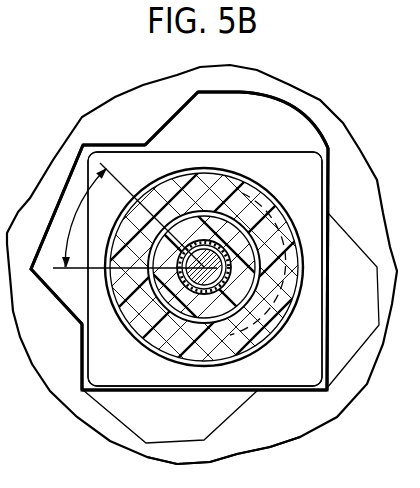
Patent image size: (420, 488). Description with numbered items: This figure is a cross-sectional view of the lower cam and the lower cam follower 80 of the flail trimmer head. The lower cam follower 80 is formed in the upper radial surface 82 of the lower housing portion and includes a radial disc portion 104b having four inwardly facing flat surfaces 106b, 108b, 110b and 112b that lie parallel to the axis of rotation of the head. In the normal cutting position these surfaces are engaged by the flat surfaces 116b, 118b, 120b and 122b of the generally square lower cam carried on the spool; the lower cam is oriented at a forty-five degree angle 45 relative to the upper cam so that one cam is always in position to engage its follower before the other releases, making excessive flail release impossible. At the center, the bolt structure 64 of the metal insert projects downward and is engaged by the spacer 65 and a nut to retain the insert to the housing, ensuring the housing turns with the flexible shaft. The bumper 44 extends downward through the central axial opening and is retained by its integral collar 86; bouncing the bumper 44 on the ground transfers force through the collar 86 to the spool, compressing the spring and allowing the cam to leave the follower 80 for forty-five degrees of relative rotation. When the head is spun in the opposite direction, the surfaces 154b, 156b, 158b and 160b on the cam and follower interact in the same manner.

The bumper 44 is at (212, 352).
The 45 degree angle 45 is at (78, 209).
The bolt structure 64 is at (215, 262).
The spacer 65 is at (243, 252).
The lower cam follower 80 is at (253, 104).
The upper radial surface 82 is at (254, 437).
The integral collar 86 is at (282, 309).
The radial disc portion 104b is at (300, 104).
The inwardly facing flat surface 106b is at (342, 230).
The inwardly facing flat surface 108b is at (178, 106).
The inwardly facing flat surface 110b is at (54, 280).
The inwardly facing flat surface 112b is at (205, 288).
The flat surface of lower cam 116b is at (220, 147).
The flat surface of lower cam 118b is at (83, 336).
The flat surface of lower cam 120b is at (103, 391).
The flat surface of lower cam 122b is at (325, 340).
The surface 154b is at (322, 186).
The surface 156b is at (128, 150).
The surface 158b is at (92, 361).
The surface 160b is at (288, 385).